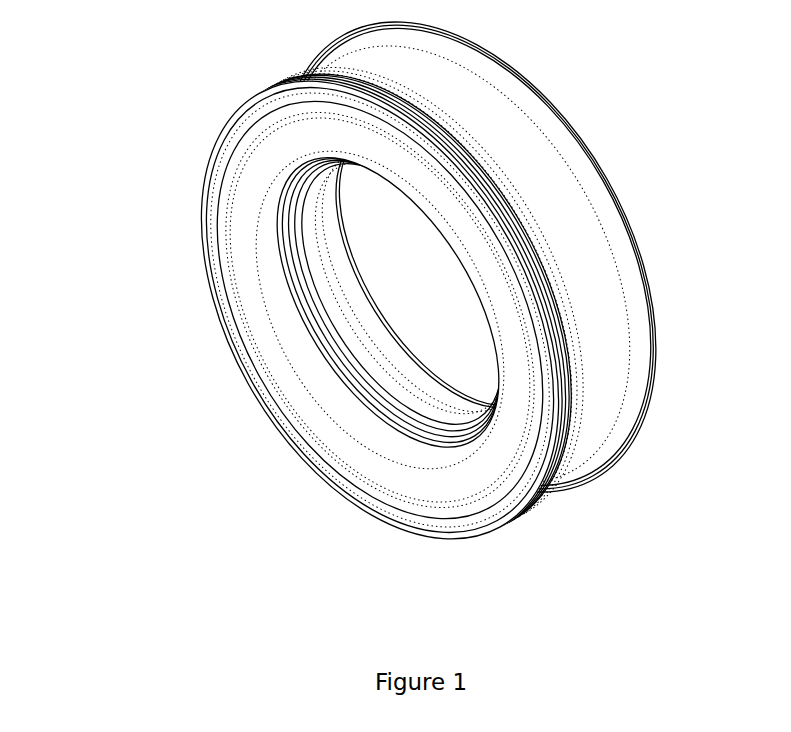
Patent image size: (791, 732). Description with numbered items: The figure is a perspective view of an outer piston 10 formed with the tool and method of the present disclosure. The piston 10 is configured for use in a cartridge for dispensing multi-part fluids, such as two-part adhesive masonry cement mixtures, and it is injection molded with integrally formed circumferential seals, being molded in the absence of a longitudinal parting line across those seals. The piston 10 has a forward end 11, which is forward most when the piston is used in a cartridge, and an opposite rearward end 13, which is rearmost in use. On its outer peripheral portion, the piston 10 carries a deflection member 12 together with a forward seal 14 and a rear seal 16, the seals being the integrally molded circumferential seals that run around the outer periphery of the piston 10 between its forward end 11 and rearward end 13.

The piston 10 is at (416, 305).
The forward end 11 is at (233, 432).
The deflection member 12 is at (477, 543).
The rearward end 13 is at (606, 121).
The forward seal 14 is at (533, 512).
The rear seal 16 is at (647, 415).